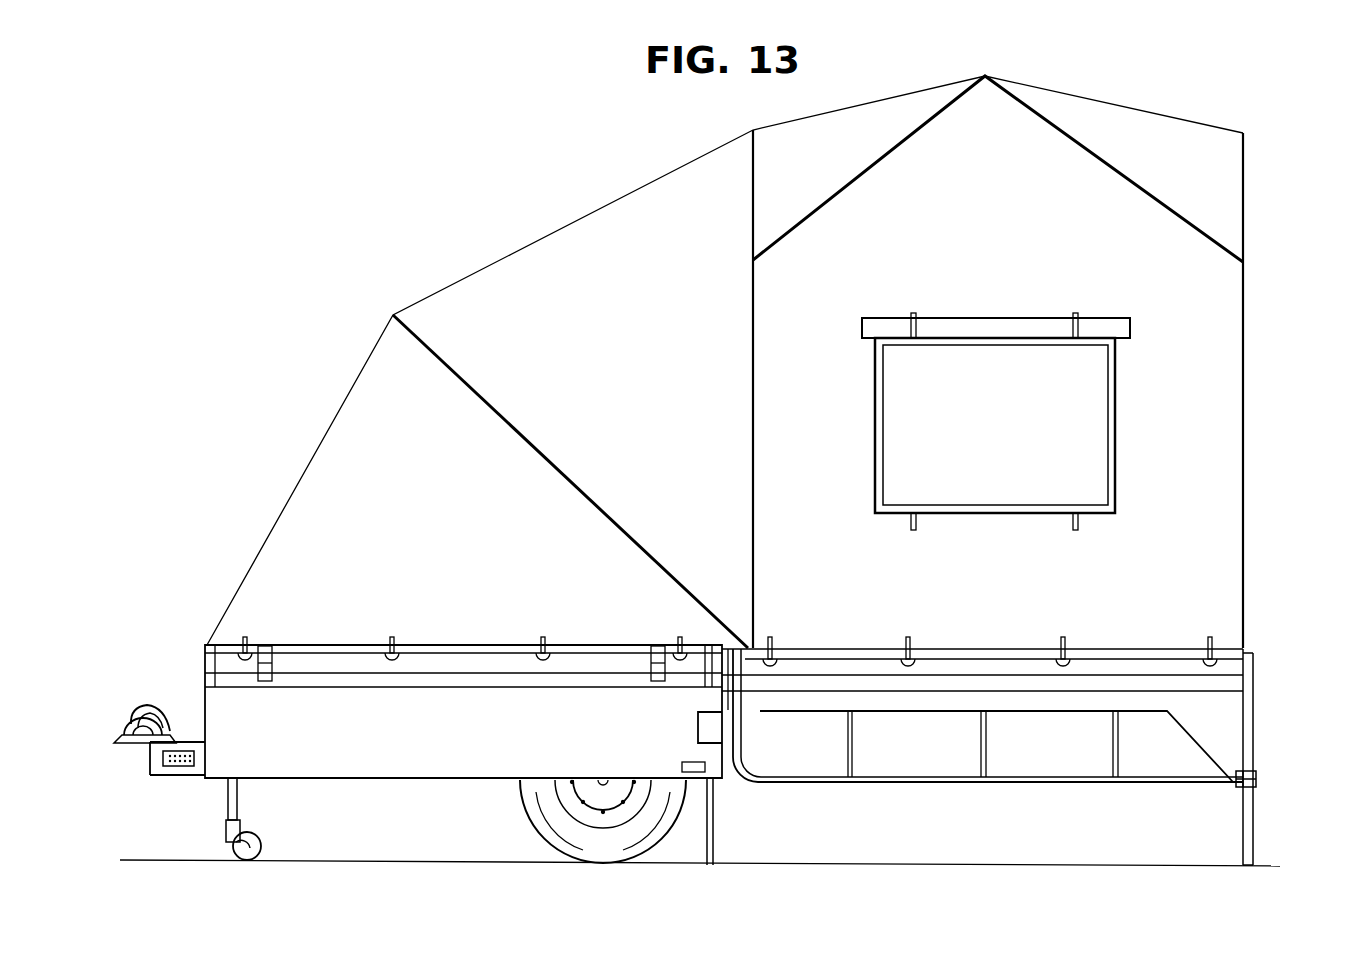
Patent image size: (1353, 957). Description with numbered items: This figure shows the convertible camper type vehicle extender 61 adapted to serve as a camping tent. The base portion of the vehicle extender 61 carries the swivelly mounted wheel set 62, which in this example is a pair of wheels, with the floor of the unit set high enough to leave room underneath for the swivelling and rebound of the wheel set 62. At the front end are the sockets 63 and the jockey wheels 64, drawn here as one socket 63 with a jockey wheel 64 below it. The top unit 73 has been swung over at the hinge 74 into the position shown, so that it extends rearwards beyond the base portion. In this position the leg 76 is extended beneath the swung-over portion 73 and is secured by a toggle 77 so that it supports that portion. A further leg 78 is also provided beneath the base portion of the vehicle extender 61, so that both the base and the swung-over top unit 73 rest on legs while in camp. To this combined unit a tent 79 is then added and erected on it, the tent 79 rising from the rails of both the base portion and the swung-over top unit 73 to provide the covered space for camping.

The vehicle extender 61 is at (373, 757).
The wheel set 62 is at (530, 808).
The socket 63 is at (128, 722).
The jockey wheel 64 is at (228, 798).
The top unit 73 is at (1045, 705).
The hinge 74 is at (723, 650).
The leg 76 is at (1240, 828).
The toggle 77 is at (1257, 777).
The further leg 78 is at (715, 840).
The tent 79 is at (590, 232).